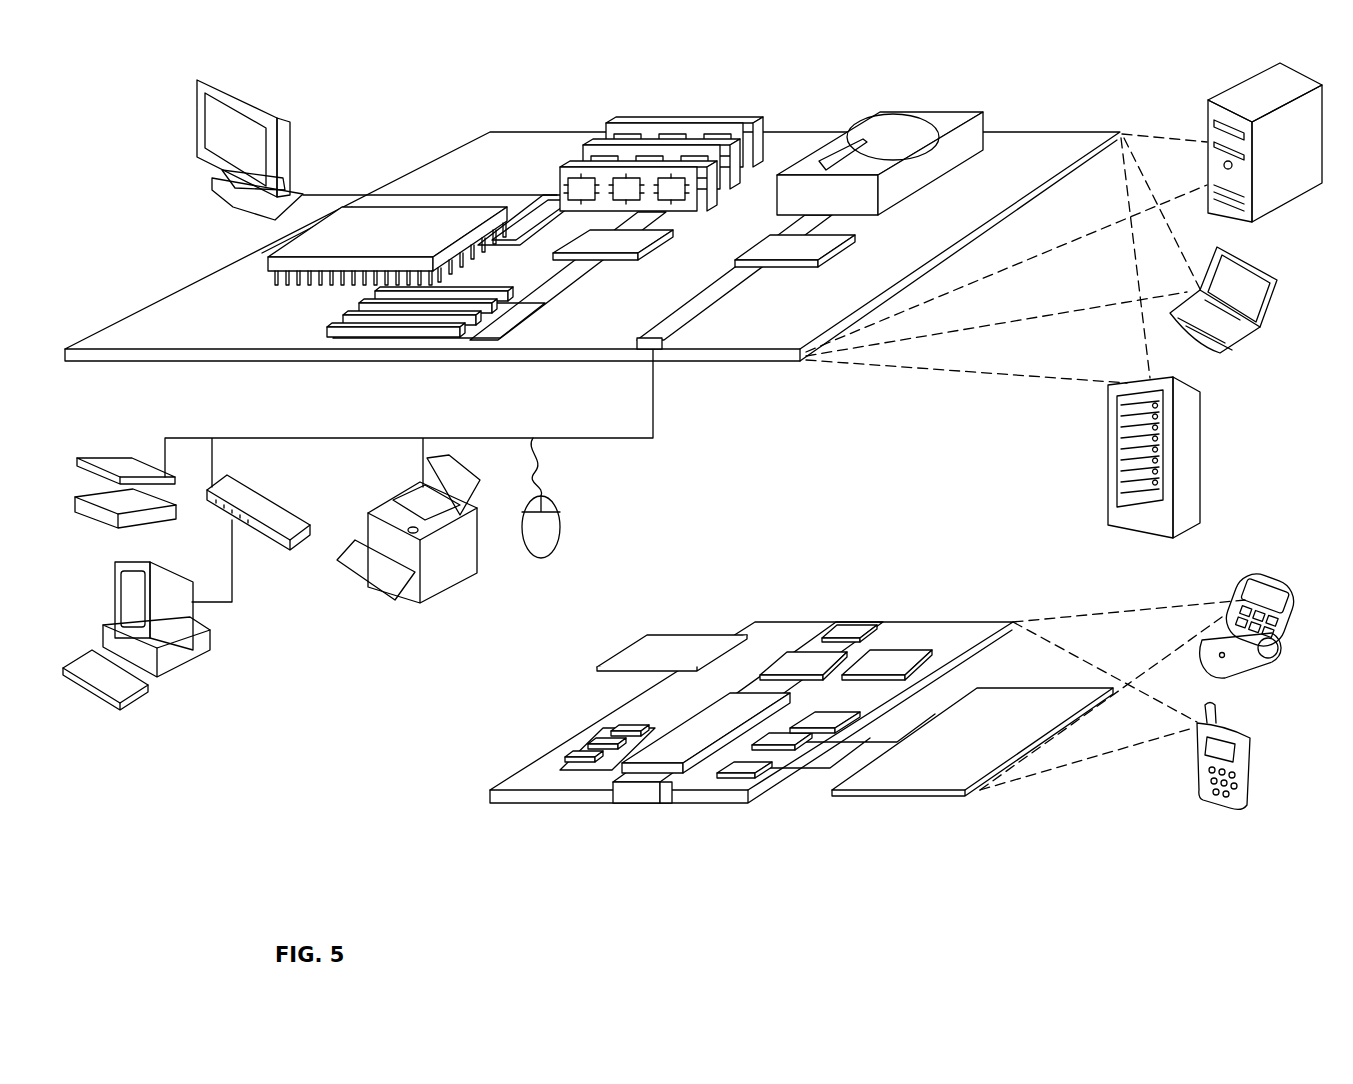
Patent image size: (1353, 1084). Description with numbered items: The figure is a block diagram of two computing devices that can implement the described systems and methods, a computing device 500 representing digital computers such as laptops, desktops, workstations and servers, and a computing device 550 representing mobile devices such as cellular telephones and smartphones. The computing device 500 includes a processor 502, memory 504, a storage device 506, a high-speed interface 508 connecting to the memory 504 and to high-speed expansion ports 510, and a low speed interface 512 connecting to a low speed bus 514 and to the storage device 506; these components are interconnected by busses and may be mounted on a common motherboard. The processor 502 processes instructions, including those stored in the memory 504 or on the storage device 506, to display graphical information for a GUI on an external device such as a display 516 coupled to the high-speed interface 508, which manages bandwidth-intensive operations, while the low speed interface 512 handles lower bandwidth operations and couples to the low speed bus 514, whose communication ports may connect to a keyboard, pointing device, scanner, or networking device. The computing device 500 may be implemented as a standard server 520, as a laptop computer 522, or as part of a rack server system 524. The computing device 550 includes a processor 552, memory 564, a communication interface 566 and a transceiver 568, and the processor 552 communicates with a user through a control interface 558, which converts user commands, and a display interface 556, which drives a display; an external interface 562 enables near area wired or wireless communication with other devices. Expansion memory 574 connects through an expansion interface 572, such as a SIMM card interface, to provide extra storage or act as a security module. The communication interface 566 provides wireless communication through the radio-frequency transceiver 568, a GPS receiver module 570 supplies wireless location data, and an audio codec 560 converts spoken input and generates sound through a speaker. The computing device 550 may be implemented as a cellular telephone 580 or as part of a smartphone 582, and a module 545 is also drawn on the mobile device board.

The computing device 500 is at (405, 103).
The processor 502 is at (266, 258).
The memory 504 is at (620, 118).
The storage device 506 is at (873, 113).
The high-speed interface 508 is at (590, 242).
The high-speed expansion ports 510 is at (353, 320).
The low speed interface 512 is at (773, 246).
The low speed bus 514 is at (662, 350).
The display 516 is at (207, 80).
The standard server 520 is at (1207, 118).
The laptop computer 522 is at (1273, 280).
The rack server system 524 is at (1108, 485).
The wireless interface module 545 is at (930, 778).
The computing device 550 is at (458, 806).
The processor 552 is at (678, 758).
The display interface 556 is at (750, 768).
The control interface 558 is at (795, 745).
The audio codec 560 is at (813, 722).
The external interface 562 is at (643, 790).
The memory 564 is at (590, 752).
The communication interface 566 is at (805, 655).
The transceiver 568 is at (887, 660).
The GPS receiver module 570 is at (857, 625).
The expansion interface 572 is at (733, 635).
The expansion memory 574 is at (650, 634).
The cellular telephone 580 is at (1253, 572).
The smartphone 582 is at (1197, 760).